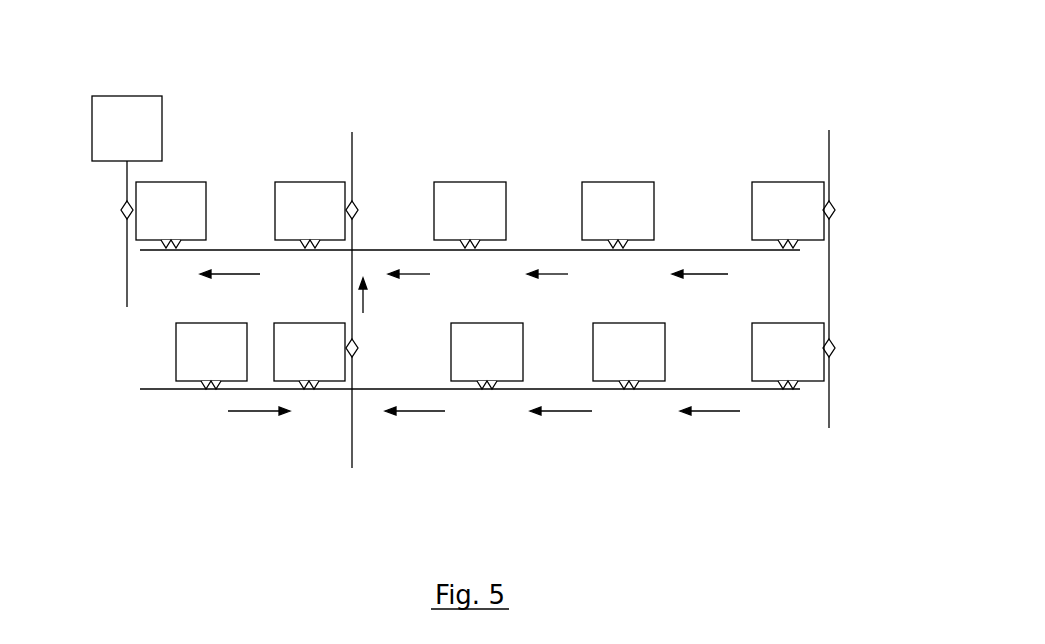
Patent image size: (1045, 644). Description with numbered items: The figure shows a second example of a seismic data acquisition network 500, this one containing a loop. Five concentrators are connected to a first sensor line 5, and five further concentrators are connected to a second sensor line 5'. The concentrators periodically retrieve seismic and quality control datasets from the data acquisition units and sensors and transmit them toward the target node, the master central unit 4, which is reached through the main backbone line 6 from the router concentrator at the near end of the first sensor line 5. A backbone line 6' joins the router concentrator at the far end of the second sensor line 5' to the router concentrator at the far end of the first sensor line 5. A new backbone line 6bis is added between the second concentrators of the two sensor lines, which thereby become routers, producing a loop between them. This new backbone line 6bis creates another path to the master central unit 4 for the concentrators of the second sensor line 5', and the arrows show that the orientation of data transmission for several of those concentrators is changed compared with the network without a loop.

The seismic data acquisition network with a loop 500 is at (665, 128).
The master central unit 4 is at (120, 144).
The first sensor line 5 is at (480, 222).
The second sensor line 5' is at (482, 406).
The main backbone line 6 is at (90, 234).
The backbone line 6' is at (863, 279).
The new backbone line 6bis is at (352, 446).